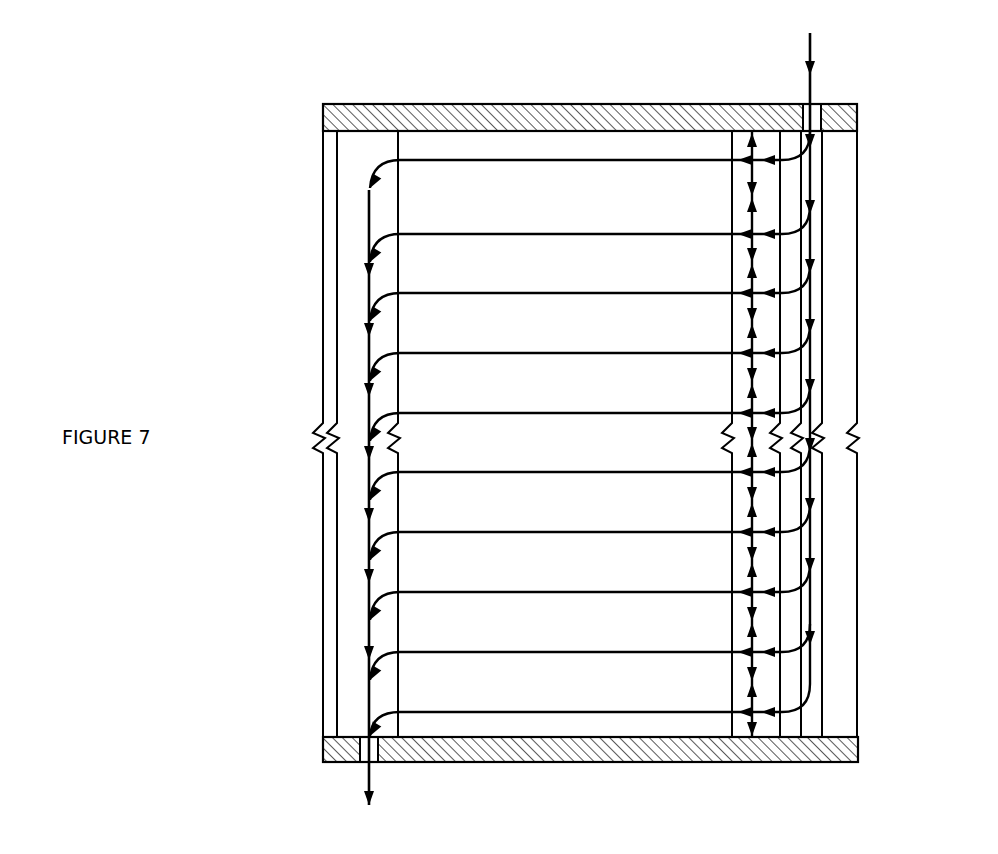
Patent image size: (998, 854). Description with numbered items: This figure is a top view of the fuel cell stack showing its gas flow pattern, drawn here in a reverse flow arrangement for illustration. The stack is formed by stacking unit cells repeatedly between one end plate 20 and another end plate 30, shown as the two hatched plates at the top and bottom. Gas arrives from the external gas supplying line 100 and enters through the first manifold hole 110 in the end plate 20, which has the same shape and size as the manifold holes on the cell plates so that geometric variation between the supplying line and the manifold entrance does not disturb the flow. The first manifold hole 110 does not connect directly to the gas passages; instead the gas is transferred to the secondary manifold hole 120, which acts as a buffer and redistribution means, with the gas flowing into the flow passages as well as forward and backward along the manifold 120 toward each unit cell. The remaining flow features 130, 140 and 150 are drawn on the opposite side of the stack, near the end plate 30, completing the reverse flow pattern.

The end plate 20 is at (322, 123).
The end plate 30 is at (858, 736).
The external gas supplying line 100 is at (815, 50).
The first manifold hole 110 is at (828, 132).
The secondary manifold hole 120 is at (789, 324).
The fluid outlet flow 130 is at (365, 772).
The outlet opening 140 is at (355, 737).
The collection flow path 150 is at (352, 304).